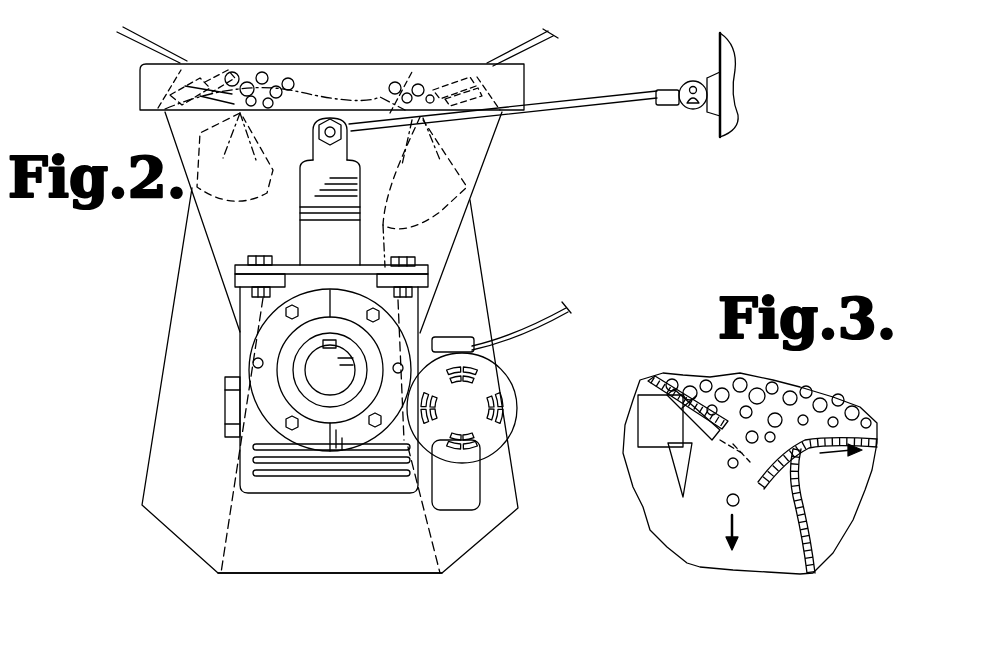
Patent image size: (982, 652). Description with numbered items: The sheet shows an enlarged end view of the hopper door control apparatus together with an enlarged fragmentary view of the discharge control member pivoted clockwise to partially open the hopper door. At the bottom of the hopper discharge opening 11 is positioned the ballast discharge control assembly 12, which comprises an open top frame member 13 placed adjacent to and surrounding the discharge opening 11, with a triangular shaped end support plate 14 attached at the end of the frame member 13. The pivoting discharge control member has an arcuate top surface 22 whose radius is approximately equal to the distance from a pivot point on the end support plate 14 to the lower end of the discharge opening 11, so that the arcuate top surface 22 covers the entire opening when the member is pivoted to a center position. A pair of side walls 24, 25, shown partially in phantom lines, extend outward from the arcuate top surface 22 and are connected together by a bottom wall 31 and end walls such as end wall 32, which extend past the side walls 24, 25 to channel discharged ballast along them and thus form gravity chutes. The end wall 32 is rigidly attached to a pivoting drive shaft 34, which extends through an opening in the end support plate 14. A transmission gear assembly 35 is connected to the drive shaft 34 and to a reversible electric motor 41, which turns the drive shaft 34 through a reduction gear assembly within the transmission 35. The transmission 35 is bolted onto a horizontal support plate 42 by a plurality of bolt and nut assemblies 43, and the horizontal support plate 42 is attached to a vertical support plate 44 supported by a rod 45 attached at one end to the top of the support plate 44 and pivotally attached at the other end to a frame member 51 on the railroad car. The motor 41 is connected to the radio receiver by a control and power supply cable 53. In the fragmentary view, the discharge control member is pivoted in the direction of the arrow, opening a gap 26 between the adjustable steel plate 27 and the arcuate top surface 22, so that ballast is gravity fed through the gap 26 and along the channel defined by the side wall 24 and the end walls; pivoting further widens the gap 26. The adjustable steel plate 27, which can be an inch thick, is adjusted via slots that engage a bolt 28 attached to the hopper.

In FIG. 2, the discharge opening 11 is at (344, 73).
In FIG. 2, the ballast discharge control assembly 12 is at (167, 334).
In FIG. 2, the open top frame member 13 is at (139, 106).
In FIG. 2, the end support plate 14 is at (450, 225).
In FIG. 2, the arcuate top surface 22 is at (428, 67).
In FIG. 3, the arcuate top surface 22 is at (866, 452).
In FIG. 2, the side wall 24 is at (235, 157).
In FIG. 2, the side wall 25 is at (425, 192).
In FIG. 3, the gap 26 is at (747, 467).
In FIG. 3, the adjustable steel plate 27 is at (663, 414).
In FIG. 3, the bolt 28 is at (702, 448).
In FIG. 2, the bottom wall 31 is at (302, 575).
In FIG. 2, the end wall 32 is at (325, 545).
In FIG. 2, the pivoting drive shaft 34 is at (341, 383).
In FIG. 2, the transmission gear assembly 35 is at (256, 353).
In FIG. 2, the reversible electric motor 41 is at (507, 415).
In FIG. 2, the horizontal support plate 42 is at (345, 266).
In FIG. 2, the bolt and nut assembly 43 is at (257, 256).
In FIG. 2, the vertical support plate 44 is at (300, 164).
In FIG. 2, the rod 45 is at (602, 113).
In FIG. 2, the frame member 51 is at (720, 53).
In FIG. 2, the control and power supply cable 53 is at (557, 313).